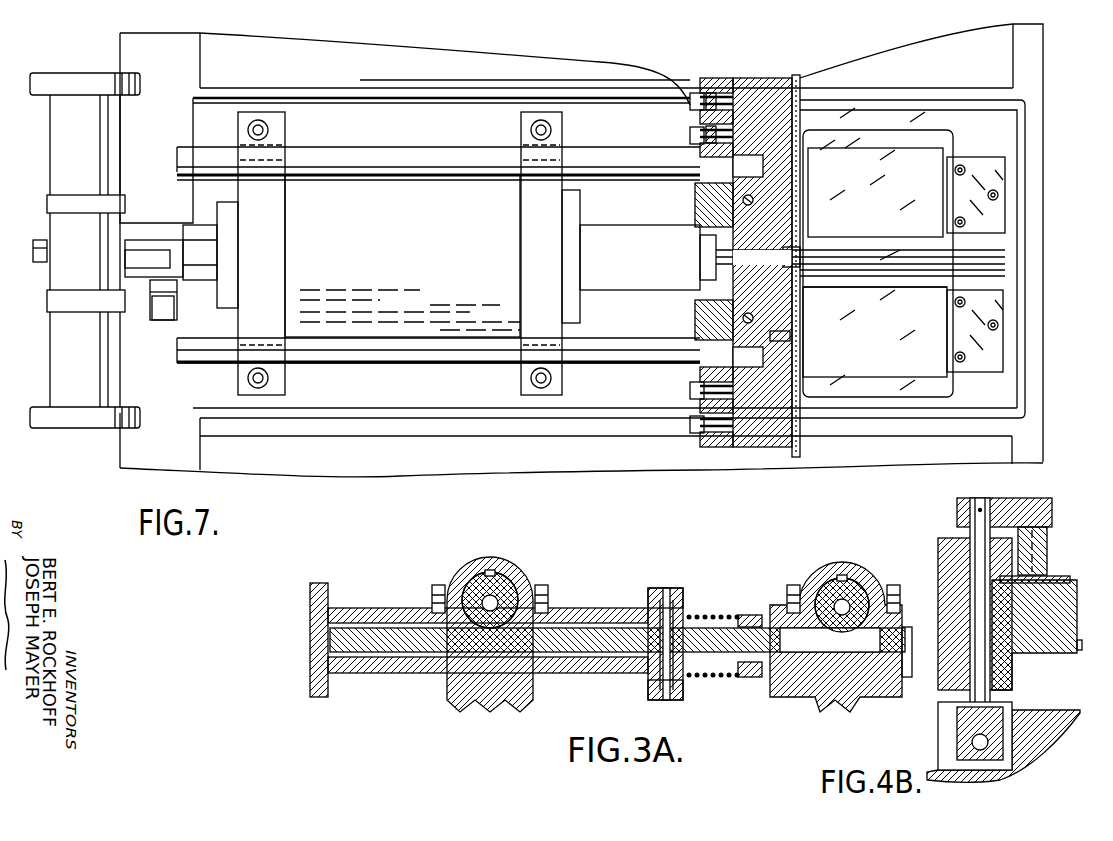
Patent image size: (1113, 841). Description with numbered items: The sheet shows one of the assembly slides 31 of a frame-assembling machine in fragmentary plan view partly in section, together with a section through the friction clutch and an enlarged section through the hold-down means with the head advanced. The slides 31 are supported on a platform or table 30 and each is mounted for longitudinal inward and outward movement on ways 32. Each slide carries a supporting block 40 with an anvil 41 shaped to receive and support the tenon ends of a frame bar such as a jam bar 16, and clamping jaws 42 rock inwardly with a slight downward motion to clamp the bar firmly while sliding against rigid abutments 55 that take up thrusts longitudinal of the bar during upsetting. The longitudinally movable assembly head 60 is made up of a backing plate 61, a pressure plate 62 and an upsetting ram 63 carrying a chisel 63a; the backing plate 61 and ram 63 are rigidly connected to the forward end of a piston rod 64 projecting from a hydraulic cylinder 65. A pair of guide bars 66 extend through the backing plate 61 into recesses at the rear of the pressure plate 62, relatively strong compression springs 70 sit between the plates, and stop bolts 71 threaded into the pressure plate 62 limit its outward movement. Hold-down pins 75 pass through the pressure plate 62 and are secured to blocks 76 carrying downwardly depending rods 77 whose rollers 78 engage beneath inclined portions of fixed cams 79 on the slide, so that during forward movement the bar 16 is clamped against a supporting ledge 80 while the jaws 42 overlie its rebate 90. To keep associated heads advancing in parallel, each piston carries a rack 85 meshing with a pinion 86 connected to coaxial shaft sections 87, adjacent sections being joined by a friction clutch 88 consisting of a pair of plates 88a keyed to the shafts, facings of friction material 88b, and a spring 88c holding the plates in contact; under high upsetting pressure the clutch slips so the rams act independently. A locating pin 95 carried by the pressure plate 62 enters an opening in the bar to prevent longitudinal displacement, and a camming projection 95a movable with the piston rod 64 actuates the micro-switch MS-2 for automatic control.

In FIG. 4B, the jam bar 16 is at (1077, 620).
In FIG. 7, the platform or table 30 is at (1040, 260).
In FIG. 4B, the assembly slide 31 is at (930, 770).
In FIG. 7, the ways 32 is at (842, 466).
In FIG. 7, the supporting block 40 is at (975, 331).
In FIG. 7, the anvil 41 is at (980, 253).
In FIG. 7, the clamping jaws 42 is at (956, 333).
In FIG. 7, the rigid abutments 55 is at (1007, 175).
In FIG. 7, the assembly head 60 is at (762, 458).
In FIG. 7, the backing plate 61 is at (713, 78).
In FIG. 7, the pressure plate 62 is at (766, 86).
In FIG. 4B, the pressure plate 62 is at (938, 550).
In FIG. 7, the upsetting ram 63 is at (799, 273).
In FIG. 7, the chisel 63a is at (789, 243).
In FIG. 7, the piston rod 64 is at (612, 222).
In FIG. 7, the hydraulic cylinder 65 is at (433, 173).
In FIG. 7, the guide bars 66 is at (637, 150).
In FIG. 7, the compression springs 70 is at (731, 78).
In FIG. 7, the stop bolts 71 is at (688, 93).
In FIG. 4B, the hold-down pins 75 is at (1047, 535).
In FIG. 4B, the blocks 76 is at (957, 505).
In FIG. 7, the rods 77 is at (755, 200).
In FIG. 4B, the rods 77 is at (957, 530).
In FIG. 4B, the rollers 78 is at (953, 763).
In FIG. 4B, the fixed cams 79 is at (957, 720).
In FIG. 4B, the supporting ledge 80 is at (1050, 580).
In FIG. 3A, the rack 85 is at (440, 673).
In FIG. 3A, the pinion 86 is at (478, 640).
In FIG. 3A, the shaft sections 87 is at (583, 665).
In FIG. 3A, the friction clutch 88 is at (655, 706).
In FIG. 3A, the clutch plates 88a is at (676, 588).
In FIG. 3A, the friction material facings 88b is at (668, 700).
In FIG. 3A, the clutch spring 88c is at (717, 612).
In FIG. 4B, the rebate 90 is at (1078, 640).
In FIG. 7, the locating pin 95 is at (792, 336).
In FIG. 7, the camming projection 95a is at (177, 283).
In FIG. 7, the micro-switch MS-2 is at (163, 322).